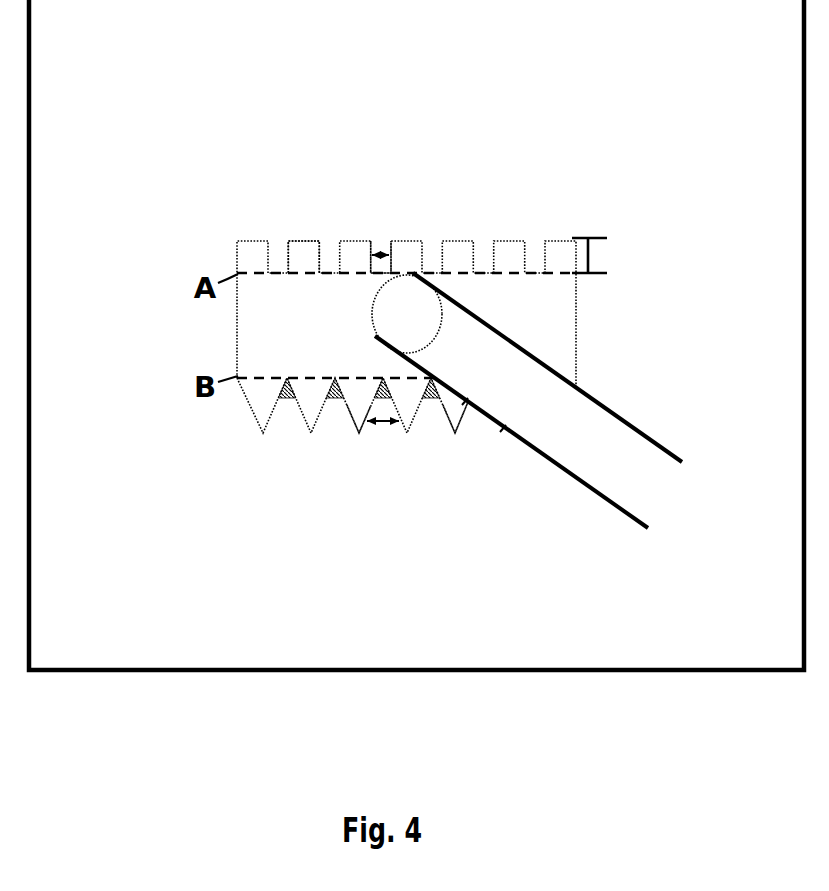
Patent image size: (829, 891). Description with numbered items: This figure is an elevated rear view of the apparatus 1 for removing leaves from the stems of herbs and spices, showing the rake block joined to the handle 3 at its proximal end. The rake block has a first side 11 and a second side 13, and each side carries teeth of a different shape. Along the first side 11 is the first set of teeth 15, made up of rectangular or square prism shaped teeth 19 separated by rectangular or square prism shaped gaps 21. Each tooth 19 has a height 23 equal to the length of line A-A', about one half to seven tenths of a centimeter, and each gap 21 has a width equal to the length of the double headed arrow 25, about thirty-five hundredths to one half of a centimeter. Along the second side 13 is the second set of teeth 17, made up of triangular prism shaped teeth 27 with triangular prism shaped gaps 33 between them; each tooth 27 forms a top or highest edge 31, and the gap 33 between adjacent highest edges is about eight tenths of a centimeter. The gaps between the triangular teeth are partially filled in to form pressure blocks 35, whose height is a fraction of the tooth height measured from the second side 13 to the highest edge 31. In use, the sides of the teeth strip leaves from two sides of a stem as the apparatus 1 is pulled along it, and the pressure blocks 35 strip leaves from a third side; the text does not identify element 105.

The apparatus 1 is at (437, 314).
The handle 3 is at (586, 457).
The first side 11 is at (483, 274).
The second side 13 is at (265, 375).
The first set of teeth 15 is at (437, 221).
The second set of teeth 17 is at (373, 454).
The rectangular or square prism shaped tooth 19 is at (302, 228).
The rectangular or square prism shaped gap 21 is at (377, 272).
The height 23 is at (590, 255).
The double headed arrow 25 is at (378, 248).
The triangular prism shaped tooth 27 is at (358, 443).
The top or highest edge 31 is at (457, 443).
The triangular prism shaped gap 33 is at (387, 433).
The pressure block 35 is at (285, 407).
The bone particle 105 is at (377, 320).